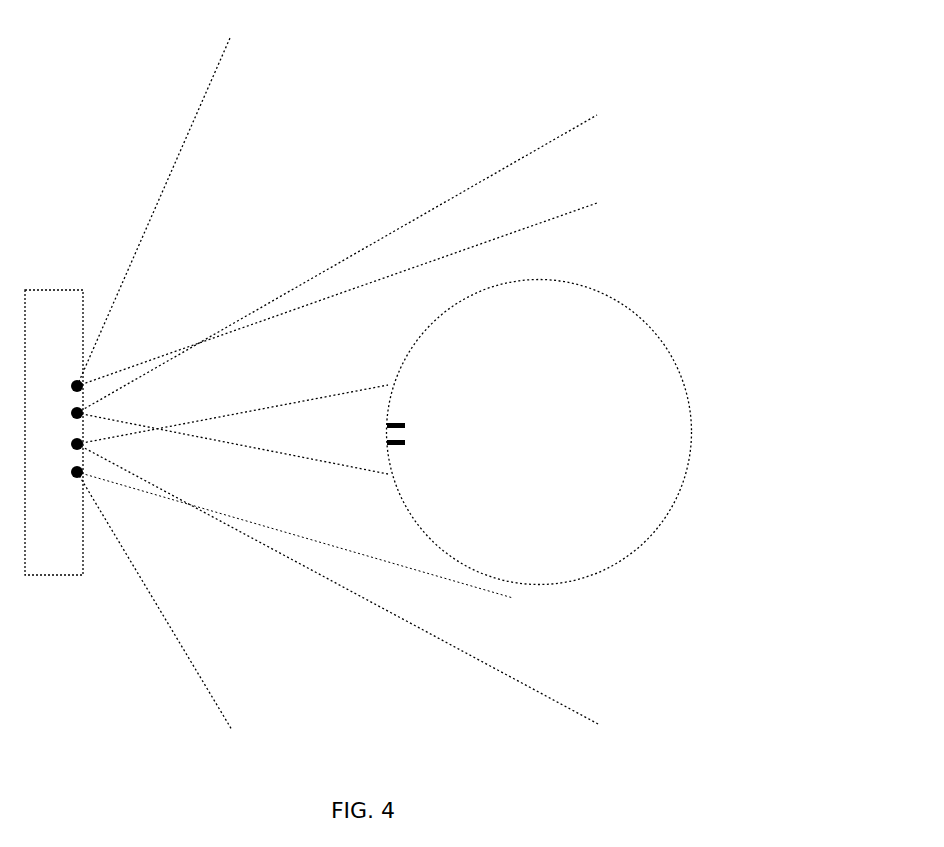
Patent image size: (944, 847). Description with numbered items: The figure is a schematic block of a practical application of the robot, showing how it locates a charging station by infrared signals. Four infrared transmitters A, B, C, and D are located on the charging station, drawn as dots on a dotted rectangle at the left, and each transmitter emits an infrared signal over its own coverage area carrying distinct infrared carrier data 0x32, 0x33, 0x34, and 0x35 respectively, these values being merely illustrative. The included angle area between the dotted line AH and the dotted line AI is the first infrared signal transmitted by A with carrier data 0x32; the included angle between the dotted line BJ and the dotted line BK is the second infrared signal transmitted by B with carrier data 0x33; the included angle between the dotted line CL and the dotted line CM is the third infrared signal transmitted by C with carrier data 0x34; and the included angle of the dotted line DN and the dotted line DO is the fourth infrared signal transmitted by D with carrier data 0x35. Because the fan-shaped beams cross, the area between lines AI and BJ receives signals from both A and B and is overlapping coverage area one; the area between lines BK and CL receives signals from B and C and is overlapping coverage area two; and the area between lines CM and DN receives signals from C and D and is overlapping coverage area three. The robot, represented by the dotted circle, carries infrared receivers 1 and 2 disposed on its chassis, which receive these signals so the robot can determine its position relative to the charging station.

The infrared transmitter A is at (66, 386).
The infrared transmitter B is at (66, 413).
The infrared transmitter C is at (66, 444).
The infrared transmitter D is at (66, 472).
The dotted line endpoint H is at (166, 199).
The dotted line endpoint I is at (347, 286).
The dotted line endpoint J is at (347, 254).
The dotted line endpoint K is at (246, 450).
The dotted line endpoint L is at (247, 408).
The dotted line endpoint M is at (350, 595).
The dotted line endpoint N is at (306, 543).
The dotted line endpoint O is at (160, 617).
The infrared receiver 1 is at (409, 422).
The infrared receiver 2 is at (410, 450).
The infrared carrier data 0x32 is at (262, 213).
The infrared carrier data 0x33 is at (302, 335).
The infrared carrier data 0x34 is at (313, 518).
The infrared carrier data 0x35 is at (285, 628).